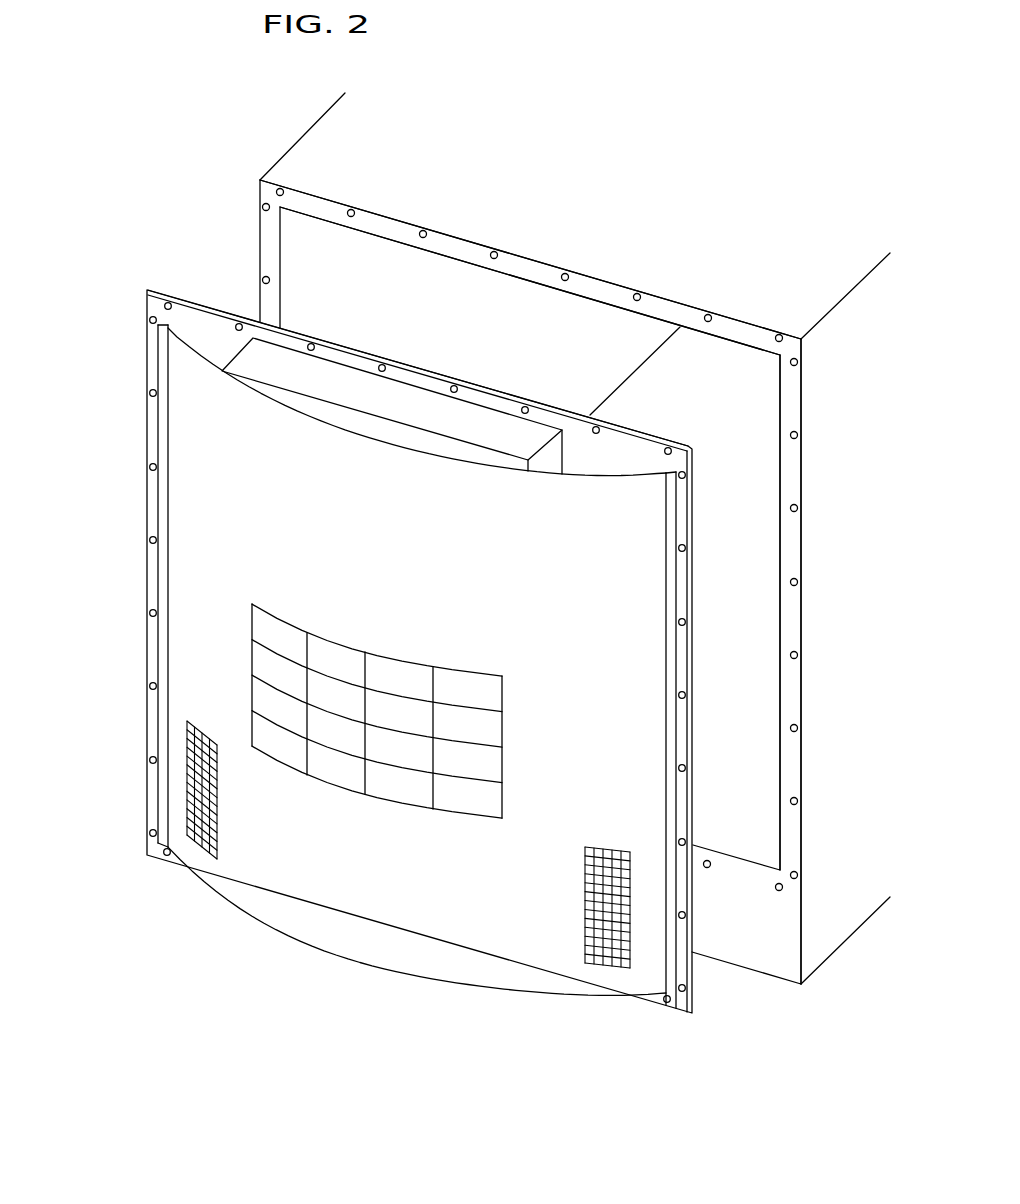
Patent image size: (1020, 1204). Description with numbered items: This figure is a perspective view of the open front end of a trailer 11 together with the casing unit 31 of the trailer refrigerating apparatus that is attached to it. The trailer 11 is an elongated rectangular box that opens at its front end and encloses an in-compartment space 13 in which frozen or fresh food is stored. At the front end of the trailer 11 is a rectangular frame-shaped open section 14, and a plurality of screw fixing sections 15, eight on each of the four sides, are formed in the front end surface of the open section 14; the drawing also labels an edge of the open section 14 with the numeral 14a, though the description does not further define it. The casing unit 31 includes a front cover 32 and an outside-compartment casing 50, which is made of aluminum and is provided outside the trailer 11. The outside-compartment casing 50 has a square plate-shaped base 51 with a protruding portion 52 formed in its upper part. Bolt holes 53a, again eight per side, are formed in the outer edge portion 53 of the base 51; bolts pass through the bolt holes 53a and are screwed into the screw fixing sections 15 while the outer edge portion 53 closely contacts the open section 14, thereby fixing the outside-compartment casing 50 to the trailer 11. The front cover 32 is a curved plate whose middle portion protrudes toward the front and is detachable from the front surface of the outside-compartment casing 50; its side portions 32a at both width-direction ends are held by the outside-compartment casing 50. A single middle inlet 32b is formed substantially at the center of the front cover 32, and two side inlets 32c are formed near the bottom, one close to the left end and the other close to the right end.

The trailer 11 is at (289, 147).
The in-compartment space 13 is at (272, 255).
The open section 14 is at (388, 230).
The inner edge of frame bar 14a is at (296, 232).
The screw fixing sections 15 is at (563, 270).
The casing unit 31 is at (407, 622).
The front cover 32 is at (192, 456).
The side portions 32a is at (163, 518).
The middle inlet 32b is at (344, 648).
The side inlets 32c is at (212, 805).
The outside-compartment casing 50 is at (204, 298).
The base 51 is at (642, 462).
The protruding portion 52 is at (415, 405).
The outer edge portion 53 is at (357, 362).
The bolt holes 53a is at (512, 410).